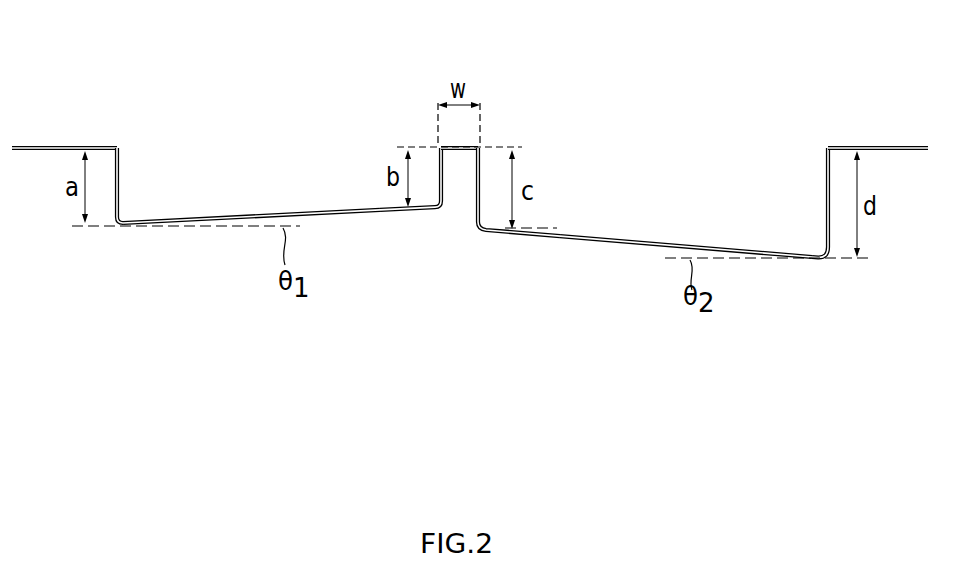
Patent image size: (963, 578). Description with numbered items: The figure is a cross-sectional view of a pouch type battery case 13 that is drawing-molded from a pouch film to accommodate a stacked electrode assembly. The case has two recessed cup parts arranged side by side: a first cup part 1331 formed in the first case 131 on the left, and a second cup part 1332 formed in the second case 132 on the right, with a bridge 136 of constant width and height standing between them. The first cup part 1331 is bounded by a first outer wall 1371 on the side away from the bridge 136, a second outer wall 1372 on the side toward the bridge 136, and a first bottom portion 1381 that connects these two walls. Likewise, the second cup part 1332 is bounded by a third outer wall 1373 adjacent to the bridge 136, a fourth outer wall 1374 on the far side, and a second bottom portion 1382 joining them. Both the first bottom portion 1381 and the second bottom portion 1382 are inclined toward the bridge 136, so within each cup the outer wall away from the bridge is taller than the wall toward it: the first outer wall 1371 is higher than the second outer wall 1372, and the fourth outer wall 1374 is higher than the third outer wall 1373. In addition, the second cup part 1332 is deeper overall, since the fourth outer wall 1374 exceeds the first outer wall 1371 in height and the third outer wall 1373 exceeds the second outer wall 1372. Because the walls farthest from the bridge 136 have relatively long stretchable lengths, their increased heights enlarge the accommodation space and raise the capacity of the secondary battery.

The battery case 13 is at (667, 84).
The first case 131 is at (101, 144).
The second case 132 is at (843, 145).
The bridge 136 is at (485, 146).
The first outer wall 1371 is at (122, 180).
The second outer wall 1372 is at (437, 175).
The third outer wall 1373 is at (483, 190).
The fourth outer wall 1374 is at (824, 212).
The first cup part 1331 is at (335, 218).
The second cup part 1332 is at (620, 243).
The first bottom portion 1381 is at (398, 212).
The second bottom portion 1382 is at (555, 237).